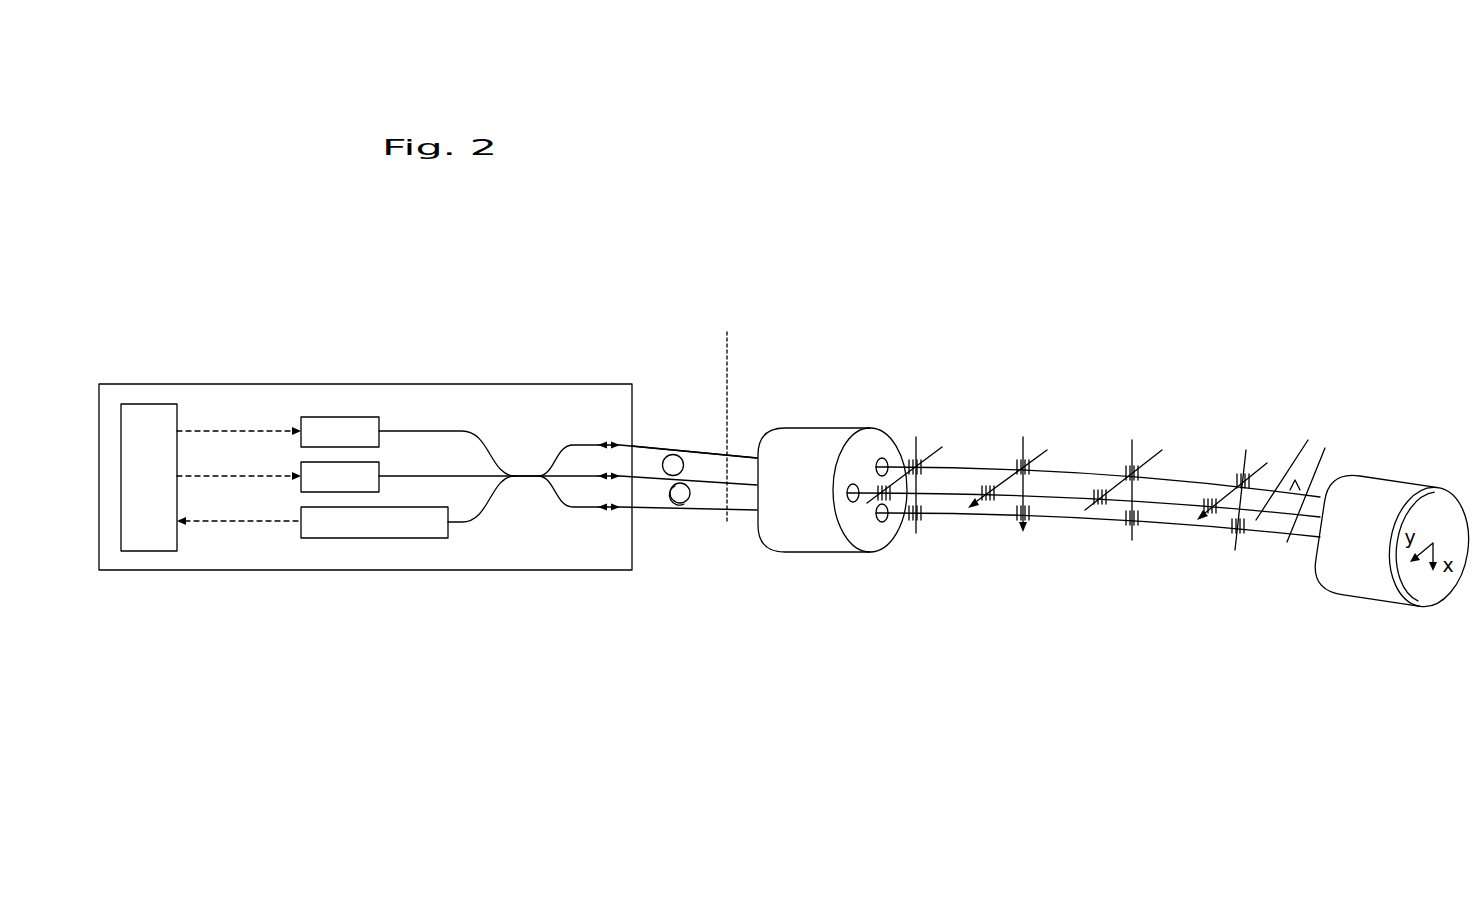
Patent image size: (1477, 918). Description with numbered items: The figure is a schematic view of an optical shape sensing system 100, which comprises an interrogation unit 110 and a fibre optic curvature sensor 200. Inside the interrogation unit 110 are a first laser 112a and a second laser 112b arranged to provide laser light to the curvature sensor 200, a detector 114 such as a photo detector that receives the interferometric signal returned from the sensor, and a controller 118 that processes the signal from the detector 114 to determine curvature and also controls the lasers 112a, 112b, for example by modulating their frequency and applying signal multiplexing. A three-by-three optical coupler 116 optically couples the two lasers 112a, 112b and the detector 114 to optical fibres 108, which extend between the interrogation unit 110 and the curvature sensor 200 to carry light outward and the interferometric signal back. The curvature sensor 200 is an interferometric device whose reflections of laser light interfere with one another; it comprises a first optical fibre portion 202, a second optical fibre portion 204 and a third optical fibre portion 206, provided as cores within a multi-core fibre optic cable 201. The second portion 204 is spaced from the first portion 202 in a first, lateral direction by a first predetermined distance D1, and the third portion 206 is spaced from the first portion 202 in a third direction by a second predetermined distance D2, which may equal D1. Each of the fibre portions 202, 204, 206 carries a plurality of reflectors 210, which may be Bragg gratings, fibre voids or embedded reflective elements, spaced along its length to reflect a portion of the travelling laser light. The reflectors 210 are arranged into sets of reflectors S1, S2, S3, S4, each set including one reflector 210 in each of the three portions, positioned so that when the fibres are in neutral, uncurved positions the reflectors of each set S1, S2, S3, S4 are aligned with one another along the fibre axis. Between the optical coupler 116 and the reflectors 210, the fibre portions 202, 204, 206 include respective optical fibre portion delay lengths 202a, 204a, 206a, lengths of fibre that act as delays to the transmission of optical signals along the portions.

The optical shape sensing system 100 is at (940, 220).
The fibre optic curvature sensor 200 is at (1222, 348).
The interrogation unit 110 is at (442, 384).
The controller 118 is at (150, 404).
The first laser 112a is at (350, 417).
The second laser 112b is at (300, 466).
The detector 114 is at (360, 538).
The 3×3 optical coupler 116 is at (520, 476).
The optical fibres 108 is at (653, 448).
The first optical fibre portion delay length 202a is at (682, 450).
The second optical fibre portion delay length 204a is at (688, 467).
The third optical fibre portion delay length 206a is at (680, 502).
The multi-core fibre optic cable 201 is at (837, 543).
The first optical fibre portion 202 is at (1080, 467).
The second optical fibre portion 204 is at (1073, 517).
The third optical fibre portion 206 is at (1280, 517).
The reflectors 210 is at (923, 520).
The first set of reflectors S1 is at (913, 451).
The second set of reflectors S2 is at (1015, 450).
The third set of reflectors S3 is at (1130, 454).
The fourth set of reflectors S4 is at (1239, 458).
The first predetermined distance D1 is at (1321, 484).
The second predetermined distance D2 is at (1283, 464).